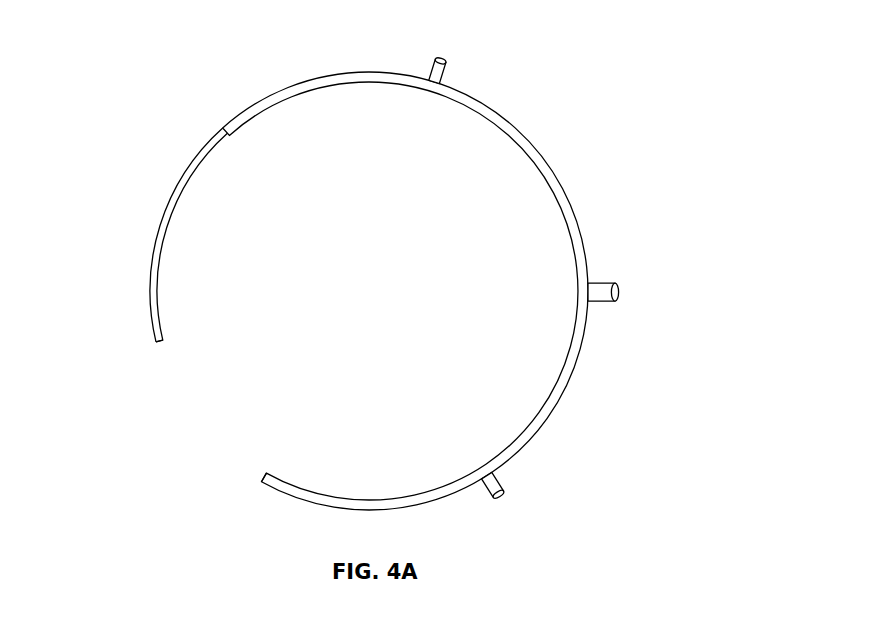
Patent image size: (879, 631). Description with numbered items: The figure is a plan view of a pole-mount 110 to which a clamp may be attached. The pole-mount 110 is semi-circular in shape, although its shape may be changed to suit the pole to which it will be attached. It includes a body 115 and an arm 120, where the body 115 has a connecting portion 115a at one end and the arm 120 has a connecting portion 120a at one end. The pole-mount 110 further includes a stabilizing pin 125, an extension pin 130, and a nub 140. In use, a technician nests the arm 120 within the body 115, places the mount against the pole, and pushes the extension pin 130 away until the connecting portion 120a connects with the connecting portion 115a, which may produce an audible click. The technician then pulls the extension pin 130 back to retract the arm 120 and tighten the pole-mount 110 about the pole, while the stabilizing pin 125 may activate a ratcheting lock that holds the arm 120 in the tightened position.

The pole-mount 110 is at (661, 469).
The body 115 is at (566, 196).
The connecting portion 115a is at (257, 512).
The arm 120 is at (166, 206).
The connecting portion 120a is at (154, 366).
The stabilizing pin 125 is at (495, 482).
The extension pin 130 is at (444, 67).
The nub 140 is at (604, 300).